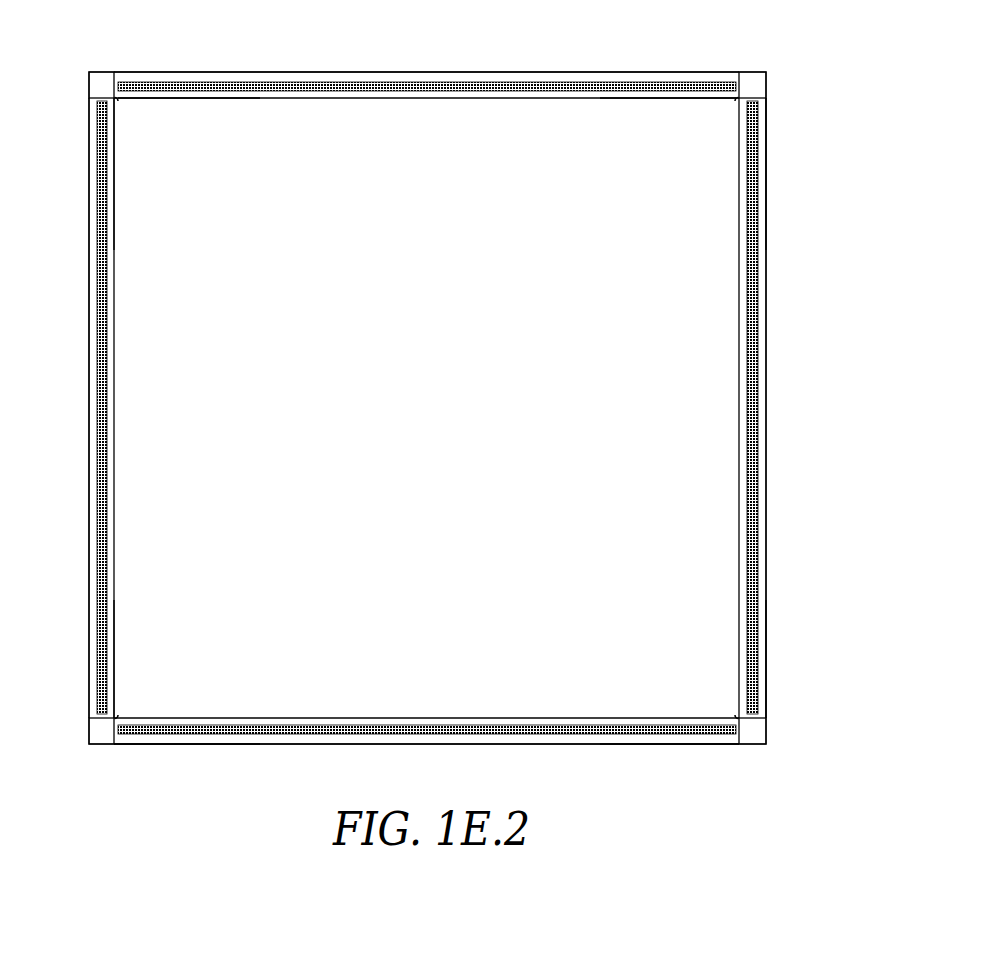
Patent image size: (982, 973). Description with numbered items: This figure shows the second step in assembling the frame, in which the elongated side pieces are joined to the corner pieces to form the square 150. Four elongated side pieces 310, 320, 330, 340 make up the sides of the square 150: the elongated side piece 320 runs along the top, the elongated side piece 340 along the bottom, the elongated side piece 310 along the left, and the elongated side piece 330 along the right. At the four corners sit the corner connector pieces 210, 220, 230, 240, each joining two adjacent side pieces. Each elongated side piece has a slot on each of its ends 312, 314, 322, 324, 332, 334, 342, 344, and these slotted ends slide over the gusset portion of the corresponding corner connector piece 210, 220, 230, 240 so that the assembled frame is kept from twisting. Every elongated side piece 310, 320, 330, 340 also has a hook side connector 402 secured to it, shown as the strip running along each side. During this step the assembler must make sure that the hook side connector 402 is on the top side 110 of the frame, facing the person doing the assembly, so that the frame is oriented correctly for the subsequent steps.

The top side 110 is at (762, 325).
The square 150 is at (463, 408).
The corner connector piece 210 is at (100, 744).
The corner connector piece 220 is at (104, 72).
The corner connector piece 230 is at (755, 72).
The corner connector piece 240 is at (750, 745).
The elongated side piece 310 is at (115, 420).
The end of elongated side piece 312 is at (115, 702).
The end of elongated side piece 314 is at (115, 150).
The elongated side piece 320 is at (440, 73).
The end of elongated side piece 322 is at (202, 100).
The end of elongated side piece 324 is at (710, 100).
The elongated side piece 330 is at (766, 440).
The end of elongated side piece 332 is at (766, 125).
The end of elongated side piece 334 is at (767, 710).
The elongated side piece 340 is at (600, 744).
The end of elongated side piece 342 is at (730, 744).
The end of elongated side piece 344 is at (117, 744).
The hook side connector 402 is at (758, 205).